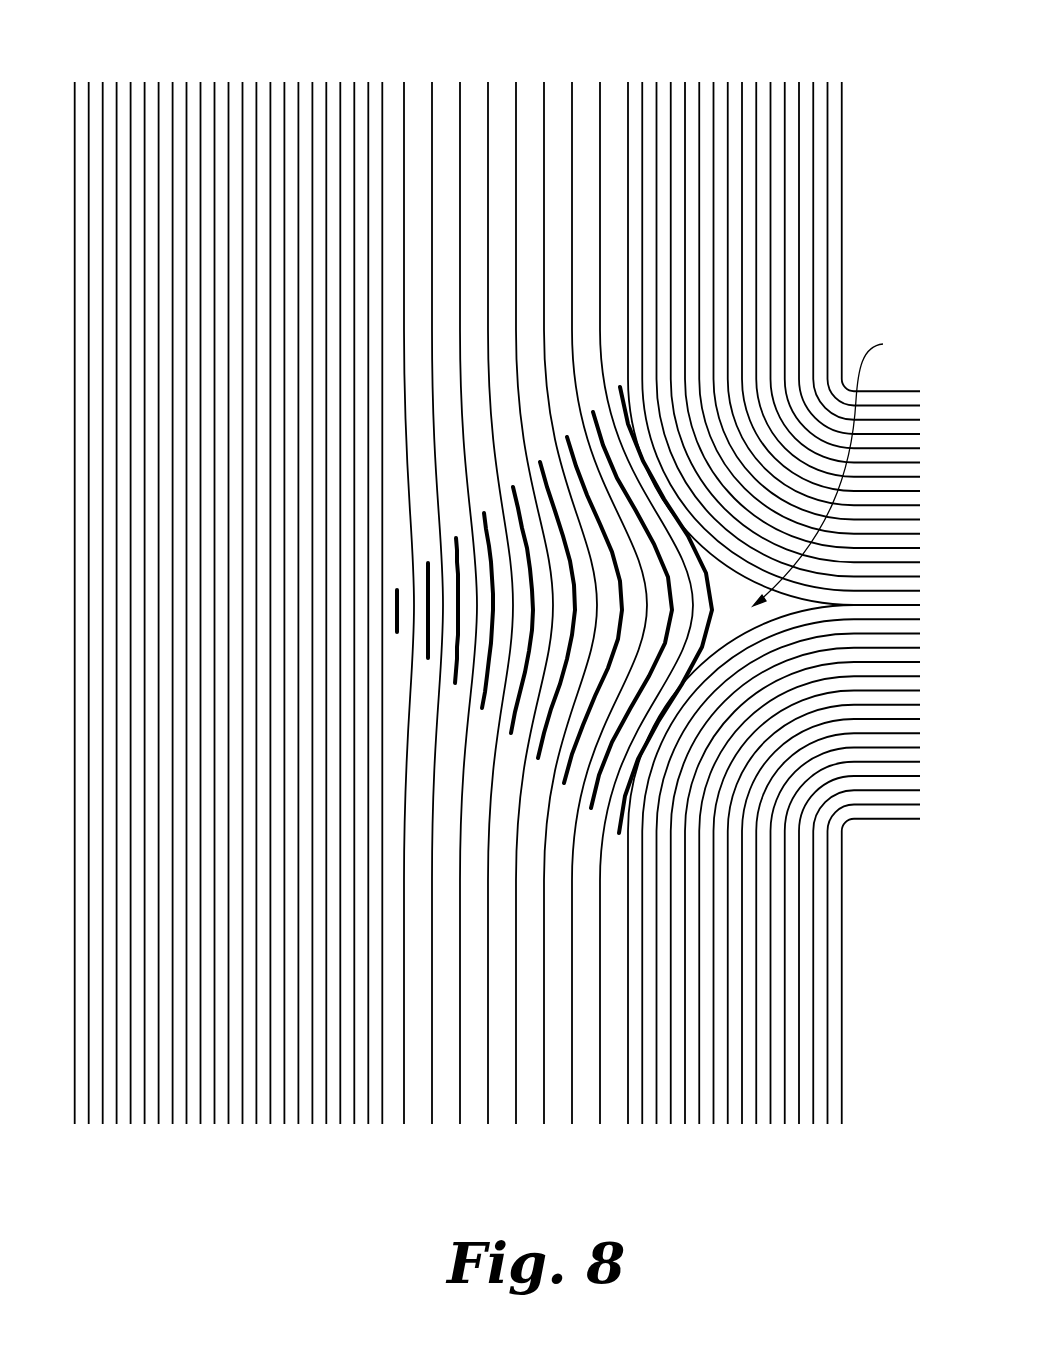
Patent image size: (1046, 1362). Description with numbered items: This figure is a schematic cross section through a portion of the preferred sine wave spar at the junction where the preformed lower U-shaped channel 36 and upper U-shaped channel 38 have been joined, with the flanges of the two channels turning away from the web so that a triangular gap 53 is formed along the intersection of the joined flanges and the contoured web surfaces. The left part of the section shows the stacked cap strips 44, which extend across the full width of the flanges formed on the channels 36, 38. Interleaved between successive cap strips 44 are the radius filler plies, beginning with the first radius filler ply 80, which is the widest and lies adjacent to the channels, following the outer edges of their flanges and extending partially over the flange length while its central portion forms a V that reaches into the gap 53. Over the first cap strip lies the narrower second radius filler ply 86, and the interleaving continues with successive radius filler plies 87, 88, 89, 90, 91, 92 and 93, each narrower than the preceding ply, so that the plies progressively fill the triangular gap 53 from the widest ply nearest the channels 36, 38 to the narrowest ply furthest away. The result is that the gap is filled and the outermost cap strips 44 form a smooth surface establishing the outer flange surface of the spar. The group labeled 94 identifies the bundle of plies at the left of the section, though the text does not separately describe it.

The first ply group of parallel fibers 94 is at (385, 67).
The upper U-shaped channel 38 is at (623, 67).
The cap strip 44 is at (61, 1137).
The lower U-shaped channel 36 is at (627, 1137).
The triangular gap 53 is at (834, 469).
The first radius filler ply 80 is at (619, 833).
The second radius filler ply 86 is at (591, 808).
The radius filler ply 87 is at (564, 783).
The radius filler ply 88 is at (538, 758).
The radius filler ply 89 is at (511, 733).
The radius filler ply 90 is at (482, 708).
The radius filler ply 91 is at (455, 683).
The radius filler ply 92 is at (428, 658).
The radius filler ply 93 is at (397, 632).